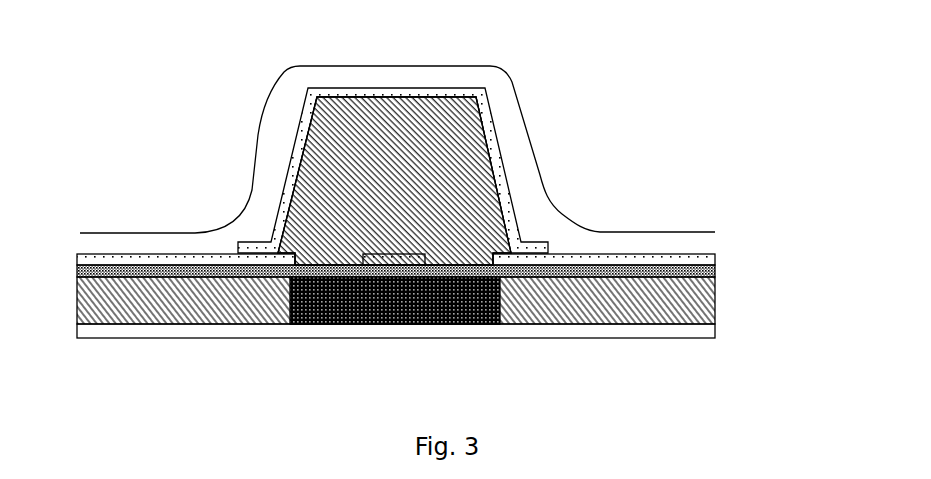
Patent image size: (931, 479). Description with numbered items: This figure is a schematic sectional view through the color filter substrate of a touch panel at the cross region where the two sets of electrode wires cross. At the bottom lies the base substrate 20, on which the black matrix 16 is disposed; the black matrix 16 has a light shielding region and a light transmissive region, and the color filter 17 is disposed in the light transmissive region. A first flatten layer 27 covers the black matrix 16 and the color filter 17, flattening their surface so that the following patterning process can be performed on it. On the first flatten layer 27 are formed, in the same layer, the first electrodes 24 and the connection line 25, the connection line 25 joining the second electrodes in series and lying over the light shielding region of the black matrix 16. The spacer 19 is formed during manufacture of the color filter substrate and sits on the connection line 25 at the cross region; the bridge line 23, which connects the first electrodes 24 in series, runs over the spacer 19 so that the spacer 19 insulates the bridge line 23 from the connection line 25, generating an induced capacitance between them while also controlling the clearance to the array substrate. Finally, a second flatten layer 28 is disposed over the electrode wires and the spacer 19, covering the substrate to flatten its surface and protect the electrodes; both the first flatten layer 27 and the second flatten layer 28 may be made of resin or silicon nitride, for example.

The black matrix 16 is at (428, 324).
The color filter 17 is at (706, 292).
The spacer 19 is at (410, 130).
The base substrate 20 is at (700, 332).
The bridge line 23 is at (493, 137).
The first electrodes 24 is at (708, 255).
The connection line 25 is at (392, 324).
The first flatten layer 27 is at (707, 270).
The second flatten layer 28 is at (583, 232).